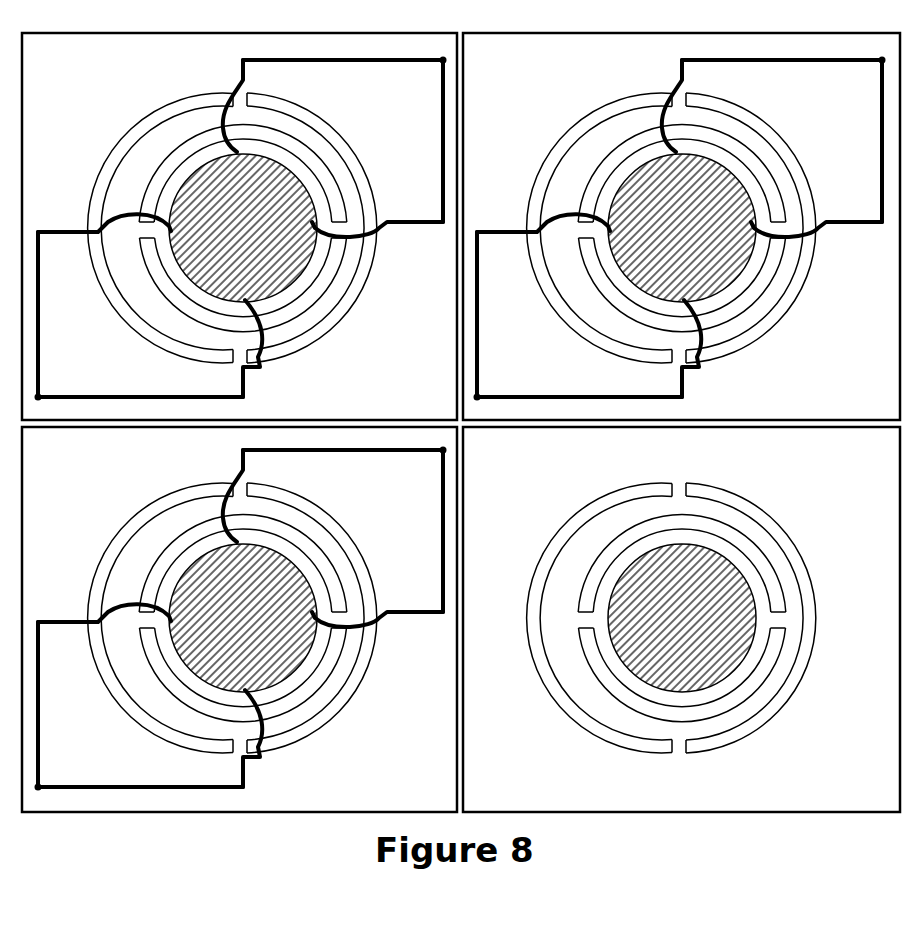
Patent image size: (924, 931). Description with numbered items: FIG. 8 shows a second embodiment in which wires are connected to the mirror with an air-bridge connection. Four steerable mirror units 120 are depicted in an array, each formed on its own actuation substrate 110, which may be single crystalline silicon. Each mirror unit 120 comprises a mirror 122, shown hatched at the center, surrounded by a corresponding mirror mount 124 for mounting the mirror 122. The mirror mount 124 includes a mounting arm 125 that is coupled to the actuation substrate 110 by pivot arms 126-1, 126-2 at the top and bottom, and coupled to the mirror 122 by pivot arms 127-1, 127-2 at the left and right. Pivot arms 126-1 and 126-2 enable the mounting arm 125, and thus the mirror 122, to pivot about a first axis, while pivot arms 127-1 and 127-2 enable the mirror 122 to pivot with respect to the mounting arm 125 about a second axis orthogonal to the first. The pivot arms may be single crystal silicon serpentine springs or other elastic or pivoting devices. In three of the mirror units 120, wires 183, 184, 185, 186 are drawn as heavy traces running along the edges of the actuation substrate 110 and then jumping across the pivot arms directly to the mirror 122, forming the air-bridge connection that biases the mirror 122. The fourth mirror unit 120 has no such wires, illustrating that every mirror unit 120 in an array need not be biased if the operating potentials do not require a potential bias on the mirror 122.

The actuation substrate 110 is at (461, 422).
The mirror unit 120 is at (143, 132).
The mirror 122 is at (277, 178).
The mirror mount 124 is at (320, 173).
The mounting arm 125 is at (348, 187).
The pivot arm 126-1 is at (247, 98).
The pivot arm 126-2 is at (240, 356).
The pivot arm 127-1 is at (340, 222).
The pivot arm 127-2 is at (147, 230).
The wire 183 is at (127, 395).
The wire 184 is at (353, 62).
The wire 185 is at (39, 310).
The wire 186 is at (443, 102).